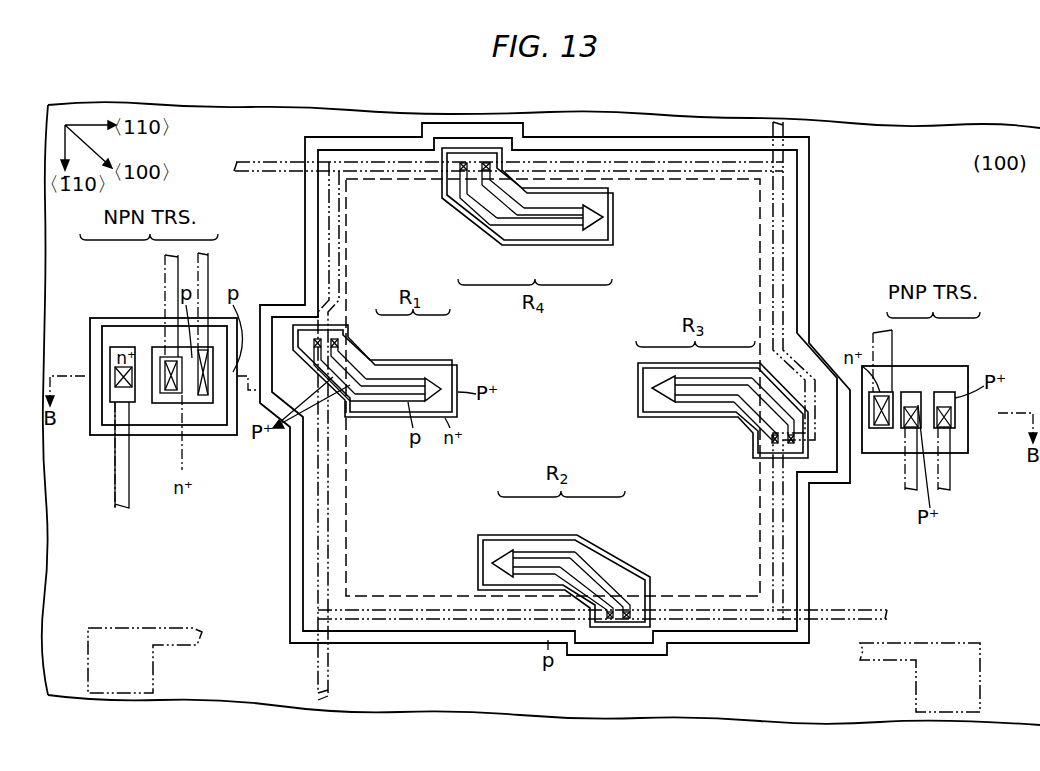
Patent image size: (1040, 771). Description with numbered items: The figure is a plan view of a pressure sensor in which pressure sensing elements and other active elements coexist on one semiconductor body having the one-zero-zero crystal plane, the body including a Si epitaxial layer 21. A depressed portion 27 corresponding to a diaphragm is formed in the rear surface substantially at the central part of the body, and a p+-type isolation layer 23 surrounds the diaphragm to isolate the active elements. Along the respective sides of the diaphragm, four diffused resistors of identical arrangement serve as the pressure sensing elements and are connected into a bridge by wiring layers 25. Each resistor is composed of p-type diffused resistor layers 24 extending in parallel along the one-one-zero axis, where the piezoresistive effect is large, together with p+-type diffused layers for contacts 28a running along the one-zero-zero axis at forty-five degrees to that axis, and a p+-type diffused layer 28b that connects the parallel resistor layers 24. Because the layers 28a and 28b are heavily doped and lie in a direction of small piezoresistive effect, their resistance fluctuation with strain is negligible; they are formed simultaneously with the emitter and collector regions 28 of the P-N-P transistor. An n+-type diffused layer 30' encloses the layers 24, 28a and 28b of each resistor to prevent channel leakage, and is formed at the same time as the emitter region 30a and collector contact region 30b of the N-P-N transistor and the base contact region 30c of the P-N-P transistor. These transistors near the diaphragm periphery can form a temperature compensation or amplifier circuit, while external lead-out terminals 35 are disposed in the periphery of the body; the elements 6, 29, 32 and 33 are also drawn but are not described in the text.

The electrode lead end 6 is at (323, 700).
The Si epitaxial layer 21 is at (652, 190).
The p+-type isolation layer 23 is at (722, 138).
The p-type diffused resistor layer 24 is at (540, 226).
The wiring layer 25 is at (405, 160).
The depressed portion 27 is at (400, 586).
The emitter and collector regions 28 is at (912, 392).
The p+-type diffused layer for contacts 28a is at (496, 216).
The p+-type diffused layer 28b is at (592, 233).
The base contact region 29 is at (203, 397).
The emitter region 30a is at (160, 355).
The collector contact region 30b is at (118, 347).
The base contact region 30c is at (880, 430).
The n+-type diffused layer 30' is at (550, 387).
The emitter region 32 is at (172, 395).
The emitter electrode lead 33 is at (952, 490).
The external lead-out terminal 35 is at (128, 696).